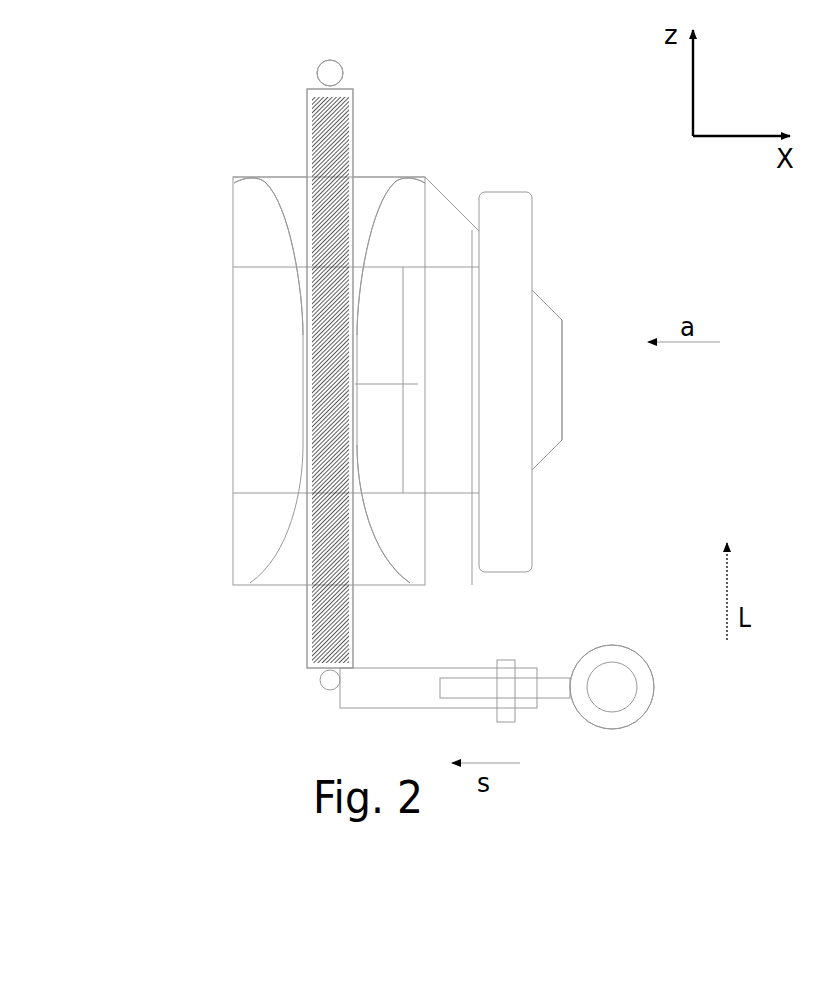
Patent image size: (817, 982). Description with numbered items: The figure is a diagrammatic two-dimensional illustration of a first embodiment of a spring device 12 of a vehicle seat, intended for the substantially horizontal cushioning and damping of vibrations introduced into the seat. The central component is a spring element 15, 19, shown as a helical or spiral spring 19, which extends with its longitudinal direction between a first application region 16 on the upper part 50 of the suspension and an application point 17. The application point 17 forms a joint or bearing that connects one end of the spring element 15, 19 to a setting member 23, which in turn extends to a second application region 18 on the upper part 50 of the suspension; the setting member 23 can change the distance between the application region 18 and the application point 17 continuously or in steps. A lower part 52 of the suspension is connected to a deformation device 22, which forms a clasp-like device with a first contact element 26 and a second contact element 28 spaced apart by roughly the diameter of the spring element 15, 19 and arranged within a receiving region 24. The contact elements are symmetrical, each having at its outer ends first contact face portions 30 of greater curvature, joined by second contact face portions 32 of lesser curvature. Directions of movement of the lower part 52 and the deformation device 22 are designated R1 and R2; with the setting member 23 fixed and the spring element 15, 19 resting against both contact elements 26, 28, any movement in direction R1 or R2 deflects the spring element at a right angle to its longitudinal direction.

The spring device 12 is at (212, 432).
The spring element 15 is at (310, 612).
The first application region 16 is at (323, 73).
The joint/application point 17 is at (320, 680).
The second application region 18 is at (612, 687).
The spiral spring 19 is at (330, 378).
The deformation device 22 is at (414, 140).
The setting member 23 is at (543, 632).
The receiving region 24 is at (278, 160).
The first contact element 26 is at (265, 385).
The second contact element 28 is at (405, 205).
The first contact face portions 30 is at (278, 202).
The second contact face portions 32 is at (292, 320).
The upper part of the suspension 50 is at (485, 394).
The lower part of the suspension 52 is at (512, 243).
The first direction R1 is at (545, 518).
The second direction R2 is at (450, 520).